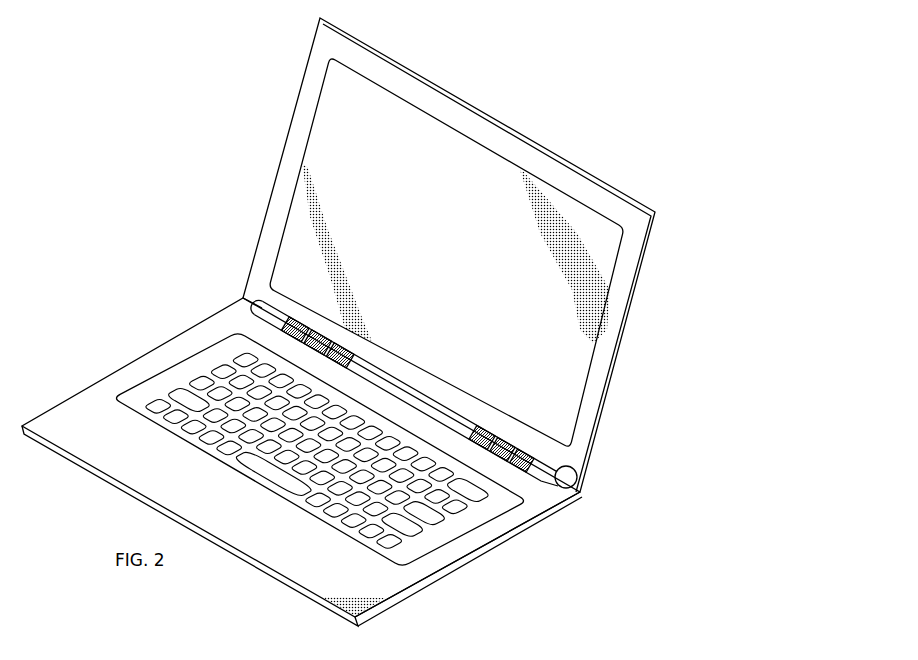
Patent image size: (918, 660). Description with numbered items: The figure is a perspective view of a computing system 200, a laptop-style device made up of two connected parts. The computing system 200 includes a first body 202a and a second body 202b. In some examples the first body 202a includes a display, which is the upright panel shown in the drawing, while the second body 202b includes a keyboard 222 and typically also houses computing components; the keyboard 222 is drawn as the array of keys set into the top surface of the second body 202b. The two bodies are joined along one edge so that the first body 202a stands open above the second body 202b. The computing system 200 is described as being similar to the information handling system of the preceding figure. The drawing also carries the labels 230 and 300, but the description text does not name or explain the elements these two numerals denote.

The computing system 200 is at (650, 78).
The first body 202a is at (618, 350).
The second body 202b is at (135, 362).
The display 230 is at (581, 201).
The hinge 300 is at (587, 483).
The keyboard 222 is at (491, 550).